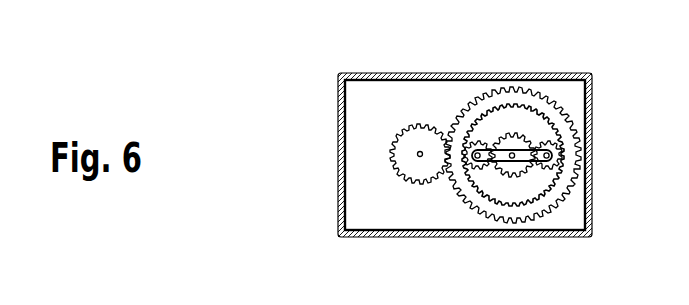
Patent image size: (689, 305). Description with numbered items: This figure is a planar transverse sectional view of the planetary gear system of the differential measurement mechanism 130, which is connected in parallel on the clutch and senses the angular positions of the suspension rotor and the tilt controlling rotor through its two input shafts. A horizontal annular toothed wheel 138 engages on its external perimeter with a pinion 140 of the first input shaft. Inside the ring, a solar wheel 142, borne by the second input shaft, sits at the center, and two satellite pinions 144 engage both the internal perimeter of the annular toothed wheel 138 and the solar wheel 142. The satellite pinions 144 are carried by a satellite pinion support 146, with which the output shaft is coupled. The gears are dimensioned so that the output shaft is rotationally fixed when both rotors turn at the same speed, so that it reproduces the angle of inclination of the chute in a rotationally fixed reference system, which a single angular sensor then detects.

The differential measurement mechanism 130 is at (439, 103).
The annular toothed wheel 138 is at (504, 95).
The pinion 140 is at (407, 153).
The solar wheel 142 is at (516, 141).
The satellite pinions 144 is at (477, 166).
The satellite pinion support 146 is at (502, 158).